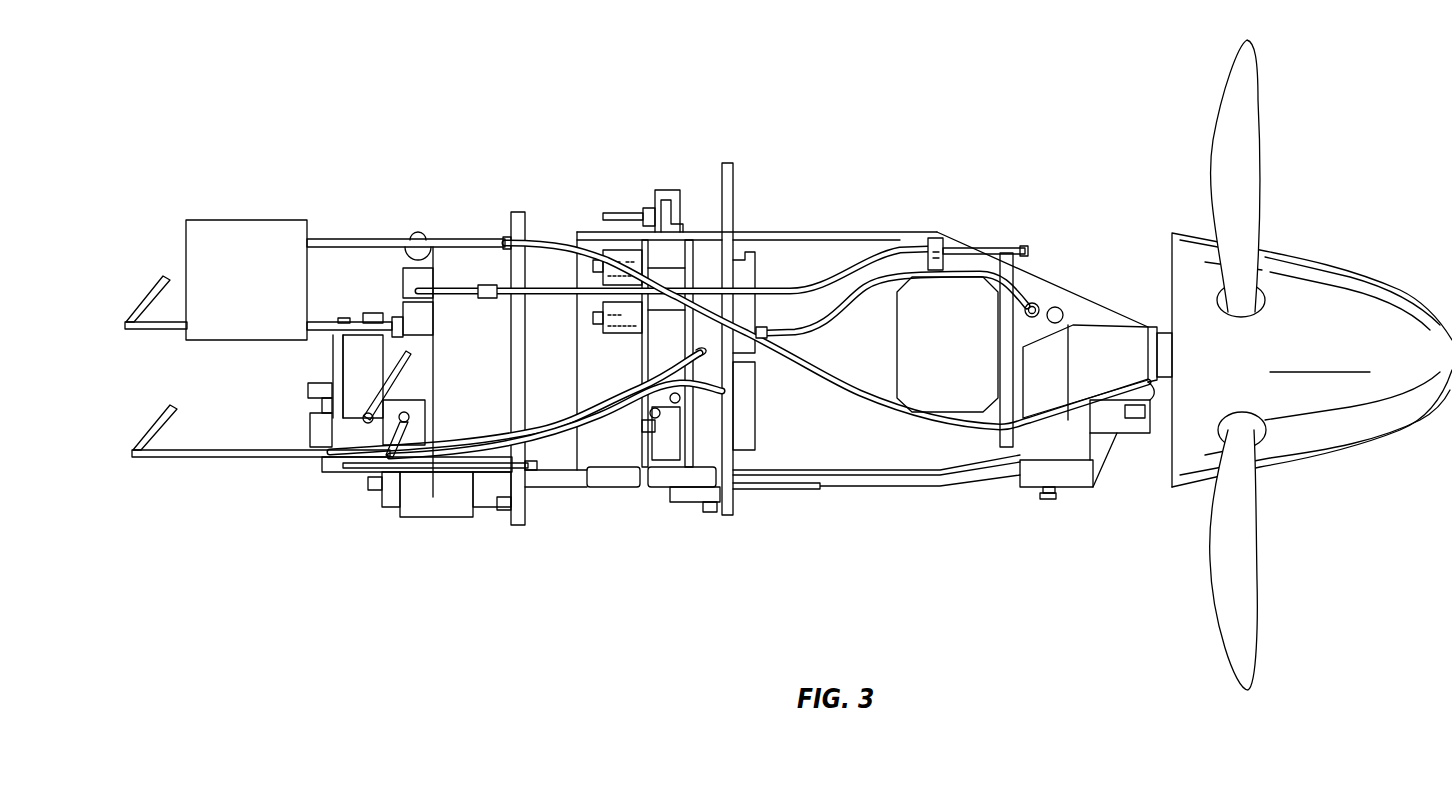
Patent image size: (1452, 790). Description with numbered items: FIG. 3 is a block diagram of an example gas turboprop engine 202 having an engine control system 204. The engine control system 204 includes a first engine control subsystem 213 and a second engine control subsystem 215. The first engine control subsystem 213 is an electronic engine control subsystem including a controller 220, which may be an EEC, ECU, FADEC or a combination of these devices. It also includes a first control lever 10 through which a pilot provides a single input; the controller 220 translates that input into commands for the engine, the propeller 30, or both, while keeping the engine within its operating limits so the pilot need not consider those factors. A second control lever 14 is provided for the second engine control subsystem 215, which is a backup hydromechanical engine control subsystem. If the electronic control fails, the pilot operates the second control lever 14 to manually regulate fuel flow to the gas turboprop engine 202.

The first control lever 10 is at (150, 299).
The second control lever 14 is at (153, 432).
The propeller 30 is at (1353, 124).
The gas turboprop engine 202 is at (940, 106).
The engine control system 204 is at (378, 106).
The first engine control subsystem 213 is at (157, 224).
The second engine control subsystem 215 is at (182, 470).
The controller 220 is at (262, 219).